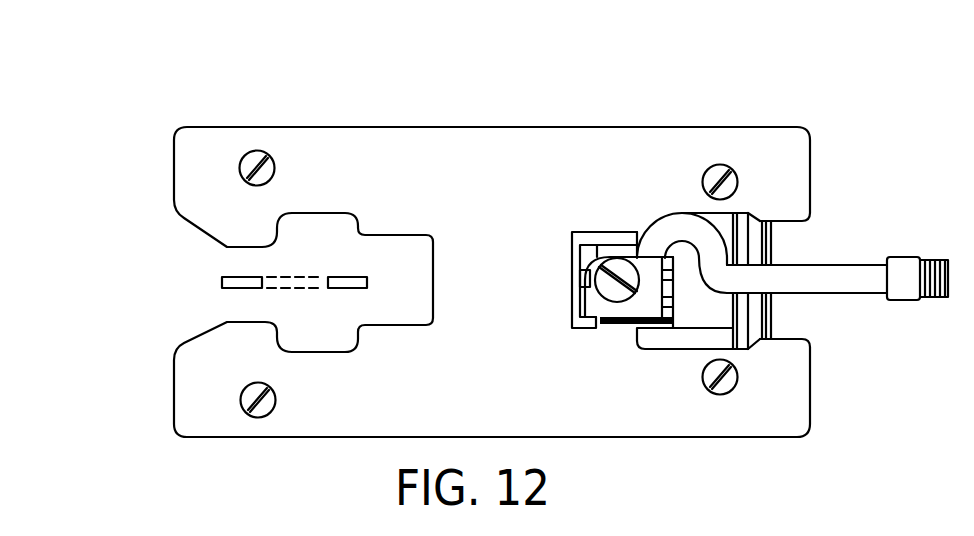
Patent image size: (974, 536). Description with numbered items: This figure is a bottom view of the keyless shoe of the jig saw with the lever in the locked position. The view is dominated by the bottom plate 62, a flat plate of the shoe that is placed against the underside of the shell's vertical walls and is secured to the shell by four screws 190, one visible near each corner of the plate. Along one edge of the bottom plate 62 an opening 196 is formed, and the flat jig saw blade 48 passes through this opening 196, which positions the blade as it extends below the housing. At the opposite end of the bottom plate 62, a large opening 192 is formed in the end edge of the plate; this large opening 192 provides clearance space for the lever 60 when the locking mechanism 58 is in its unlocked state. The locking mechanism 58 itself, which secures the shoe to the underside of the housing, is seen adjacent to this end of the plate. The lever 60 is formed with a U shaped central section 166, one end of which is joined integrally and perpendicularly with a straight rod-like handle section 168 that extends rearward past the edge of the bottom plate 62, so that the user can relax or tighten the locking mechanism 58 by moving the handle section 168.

The bottom plate 62 is at (525, 127).
The screws 190 is at (263, 160).
The jig saw blade 48 is at (232, 277).
The opening 196 is at (303, 350).
The U shaped central section 166 is at (664, 228).
The large opening 192 is at (780, 218).
The handle section 168 is at (837, 281).
The lever 60 is at (833, 294).
The locking mechanism 58 is at (600, 303).